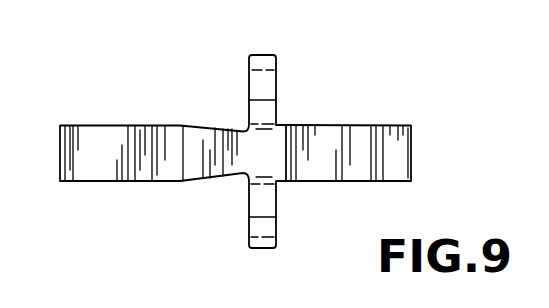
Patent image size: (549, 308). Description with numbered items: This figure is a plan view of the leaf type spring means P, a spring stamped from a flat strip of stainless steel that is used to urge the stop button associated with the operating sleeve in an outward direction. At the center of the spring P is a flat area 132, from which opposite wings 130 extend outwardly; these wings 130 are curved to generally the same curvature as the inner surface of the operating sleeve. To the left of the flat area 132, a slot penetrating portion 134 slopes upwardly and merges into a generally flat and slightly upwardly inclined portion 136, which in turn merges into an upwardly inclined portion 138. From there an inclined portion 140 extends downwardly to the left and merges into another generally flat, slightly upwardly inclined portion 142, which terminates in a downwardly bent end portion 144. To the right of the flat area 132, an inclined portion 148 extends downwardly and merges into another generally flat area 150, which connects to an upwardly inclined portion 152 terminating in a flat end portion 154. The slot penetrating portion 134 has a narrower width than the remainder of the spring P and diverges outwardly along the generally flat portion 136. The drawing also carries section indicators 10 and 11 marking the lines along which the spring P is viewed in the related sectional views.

The wings 130 is at (268, 75).
The flat area 132 is at (263, 145).
The slot penetrating portion 134 is at (230, 145).
The generally flat and slightly upwardly inclined portion 136 is at (190, 168).
The upwardly inclined portion 138 is at (163, 142).
The inclined portion 140 is at (138, 172).
The generally flat slightly upwardly inclined portion 142 is at (93, 145).
The downwardly bent end portion 144 is at (62, 172).
The inclined portion 148 is at (295, 165).
The generally flat area 150 is at (337, 142).
The upwardly inclined portion 152 is at (380, 174).
The flat end portion 154 is at (412, 166).
The leaf type spring means P is at (356, 84).
The section line 10- 10 is at (2, 76).
The section line 11- 11 is at (318, 14).